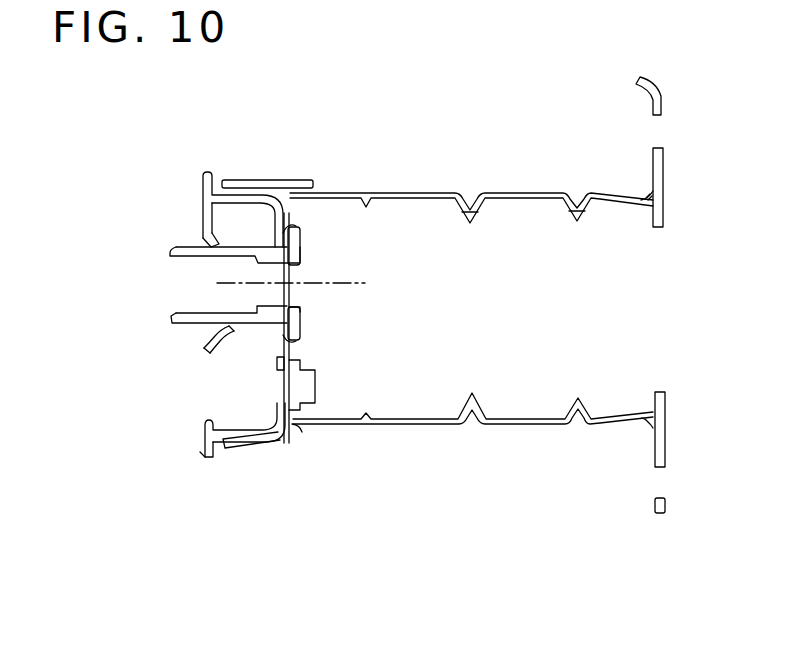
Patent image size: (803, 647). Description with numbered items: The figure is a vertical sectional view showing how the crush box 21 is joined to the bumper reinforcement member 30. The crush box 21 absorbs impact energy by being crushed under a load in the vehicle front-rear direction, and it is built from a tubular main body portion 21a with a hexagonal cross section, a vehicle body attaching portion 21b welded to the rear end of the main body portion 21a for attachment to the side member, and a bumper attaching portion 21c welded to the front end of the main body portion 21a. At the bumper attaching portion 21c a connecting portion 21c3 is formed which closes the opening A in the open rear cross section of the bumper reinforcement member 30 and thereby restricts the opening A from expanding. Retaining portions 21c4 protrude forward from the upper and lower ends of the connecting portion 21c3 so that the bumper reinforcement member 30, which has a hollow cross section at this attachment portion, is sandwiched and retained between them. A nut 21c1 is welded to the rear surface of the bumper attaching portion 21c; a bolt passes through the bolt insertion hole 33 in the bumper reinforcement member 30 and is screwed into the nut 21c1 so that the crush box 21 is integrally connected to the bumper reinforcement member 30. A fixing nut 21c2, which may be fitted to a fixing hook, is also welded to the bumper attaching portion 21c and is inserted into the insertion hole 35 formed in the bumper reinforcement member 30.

The crush box 21 is at (418, 191).
The main body portion 21a is at (448, 425).
The vehicle body attaching portion 21b is at (664, 178).
The bumper attaching portion 21c is at (284, 438).
The nut 21c1 is at (306, 383).
The fixing nut 21c2 is at (174, 320).
The connecting portion 21c3 is at (294, 350).
The retaining portion 21c4 is at (256, 178).
The bumper reinforcement member 30 is at (203, 176).
The bolt insertion hole 33 is at (203, 417).
The insertion hole 35 is at (206, 247).
The opening A is at (283, 338).